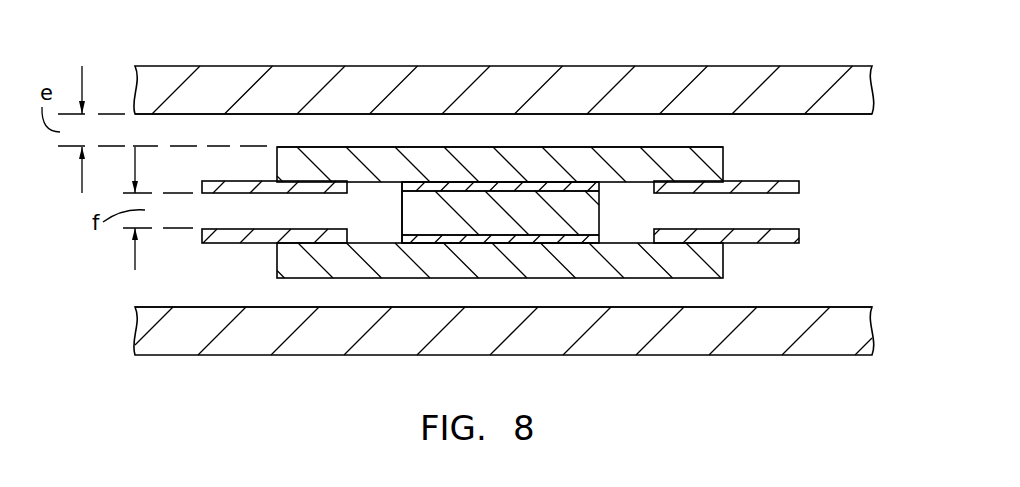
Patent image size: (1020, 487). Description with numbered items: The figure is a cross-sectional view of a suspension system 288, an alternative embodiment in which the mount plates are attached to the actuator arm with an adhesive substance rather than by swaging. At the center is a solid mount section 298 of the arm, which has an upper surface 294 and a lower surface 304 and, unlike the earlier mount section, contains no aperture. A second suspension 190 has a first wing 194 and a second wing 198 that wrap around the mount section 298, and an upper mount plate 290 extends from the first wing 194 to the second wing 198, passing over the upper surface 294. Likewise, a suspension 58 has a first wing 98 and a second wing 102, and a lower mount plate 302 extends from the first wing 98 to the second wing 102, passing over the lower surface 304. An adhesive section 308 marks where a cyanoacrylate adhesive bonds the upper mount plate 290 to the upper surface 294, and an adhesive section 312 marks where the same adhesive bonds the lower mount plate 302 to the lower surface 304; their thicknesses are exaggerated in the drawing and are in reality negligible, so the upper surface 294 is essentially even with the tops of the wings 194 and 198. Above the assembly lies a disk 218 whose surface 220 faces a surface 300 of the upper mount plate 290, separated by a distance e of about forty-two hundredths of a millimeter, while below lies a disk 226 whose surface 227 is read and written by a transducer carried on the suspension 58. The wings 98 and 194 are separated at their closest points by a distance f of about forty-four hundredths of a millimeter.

The disk 218 is at (846, 68).
The surface 220 is at (856, 116).
The disk 226 is at (168, 346).
The surface 227 is at (856, 308).
The suspension system 288 is at (176, 256).
The surface 300 is at (321, 147).
The upper mount plate 290 is at (621, 147).
The lower mount plate 302 is at (628, 278).
The upper surface 294 is at (581, 192).
The adhesive section 308 is at (434, 183).
The adhesive section 312 is at (526, 243).
The mount section 298 is at (404, 199).
The lower surface 304 is at (427, 234).
The second suspension 190 is at (822, 192).
The first wing 194 is at (233, 181).
The second wing 198 is at (776, 182).
The suspension 58 is at (824, 243).
The first wing 98 is at (233, 244).
The second wing 102 is at (778, 245).